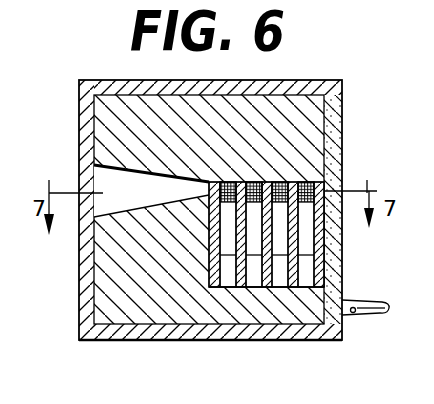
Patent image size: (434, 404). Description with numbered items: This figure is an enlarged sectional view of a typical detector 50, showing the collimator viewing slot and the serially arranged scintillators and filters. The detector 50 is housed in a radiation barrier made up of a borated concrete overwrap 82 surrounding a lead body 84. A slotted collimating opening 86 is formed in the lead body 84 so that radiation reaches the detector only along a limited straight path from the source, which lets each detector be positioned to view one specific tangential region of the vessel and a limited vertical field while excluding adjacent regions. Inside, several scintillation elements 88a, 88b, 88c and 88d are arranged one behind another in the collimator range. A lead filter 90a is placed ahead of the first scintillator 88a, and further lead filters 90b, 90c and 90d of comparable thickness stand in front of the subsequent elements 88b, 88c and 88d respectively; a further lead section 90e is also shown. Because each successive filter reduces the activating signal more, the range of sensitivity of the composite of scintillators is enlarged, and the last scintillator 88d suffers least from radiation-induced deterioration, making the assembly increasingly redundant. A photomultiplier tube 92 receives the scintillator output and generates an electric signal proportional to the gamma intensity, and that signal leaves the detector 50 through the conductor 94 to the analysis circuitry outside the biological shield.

The detector 50 is at (114, 72).
The borated concrete overwrap 82 is at (162, 331).
The lead body 84 is at (110, 110).
The slotted collimating opening 86 is at (143, 172).
The first scintillator element 88a is at (227, 181).
The second scintillator element 88b is at (255, 181).
The third scintillator element 88c is at (279, 181).
The last scintillator element 88d is at (311, 181).
The lead filter 90a is at (213, 213).
The second lead filter 90b is at (241, 231).
The lead filter 90c is at (268, 258).
The lead filter 90d is at (297, 281).
The separator 90e is at (324, 272).
The photomultiplier tube 92 is at (310, 240).
The conductor 94 is at (355, 313).